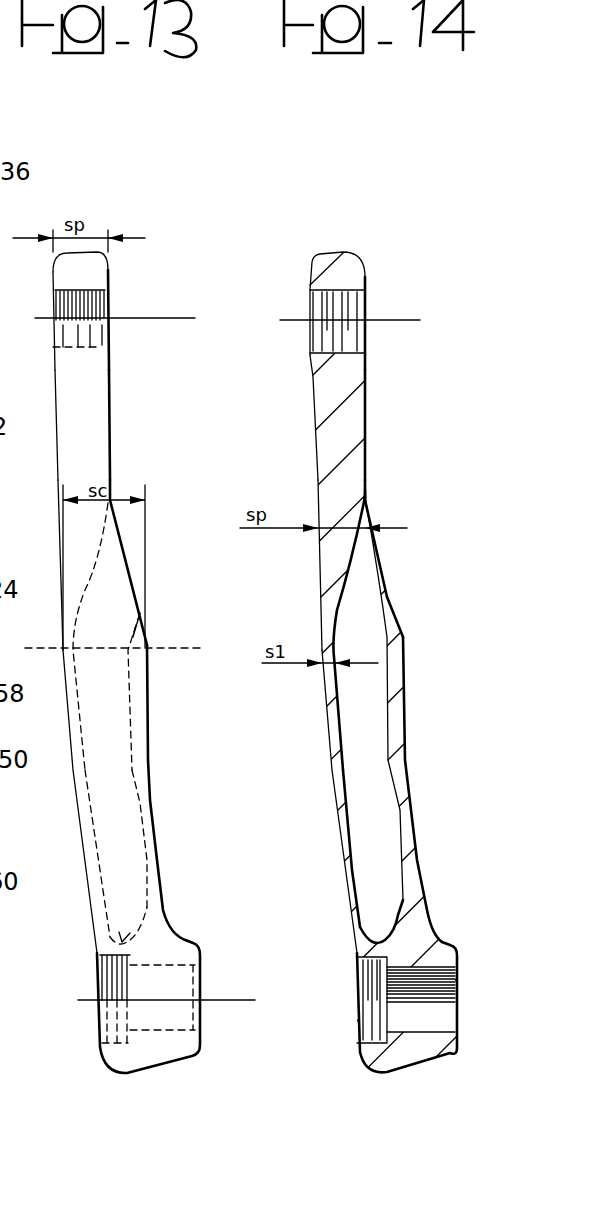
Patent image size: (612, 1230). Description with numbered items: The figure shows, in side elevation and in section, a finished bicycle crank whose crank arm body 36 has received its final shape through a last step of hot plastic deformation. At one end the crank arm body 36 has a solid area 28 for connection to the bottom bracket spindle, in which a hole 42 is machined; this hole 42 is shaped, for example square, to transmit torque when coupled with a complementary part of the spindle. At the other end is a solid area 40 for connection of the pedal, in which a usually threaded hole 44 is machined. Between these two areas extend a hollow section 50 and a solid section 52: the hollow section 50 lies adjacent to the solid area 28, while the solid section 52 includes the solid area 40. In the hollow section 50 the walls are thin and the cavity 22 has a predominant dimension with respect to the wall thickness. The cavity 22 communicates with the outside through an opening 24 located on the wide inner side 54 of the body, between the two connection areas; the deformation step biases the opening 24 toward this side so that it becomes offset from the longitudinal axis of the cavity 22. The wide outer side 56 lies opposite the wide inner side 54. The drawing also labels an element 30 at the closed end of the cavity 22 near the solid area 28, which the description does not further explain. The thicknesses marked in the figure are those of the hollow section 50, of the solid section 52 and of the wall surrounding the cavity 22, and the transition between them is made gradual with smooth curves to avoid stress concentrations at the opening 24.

In FIG. 13, the cavity 22 is at (158, 804).
In FIG. 14, the cavity 22 is at (388, 781).
In FIG. 13, the opening 24 is at (152, 612).
In FIG. 14, the opening 24 is at (398, 612).
In FIG. 13, the solid area for connection to the bottom bracket spindle 28 is at (172, 951).
In FIG. 14, the solid area for connection to the bottom bracket spindle 28 is at (442, 942).
In FIG. 13, the closed end of slot 30 is at (173, 903).
In FIG. 14, the closed end of slot 30 is at (393, 928).
In FIG. 13, the crank arm body 36 is at (180, 267).
In FIG. 14, the crank arm body 36 is at (421, 260).
In FIG. 13, the solid area for connection of the pedal 40 is at (95, 357).
In FIG. 14, the solid area for connection of the pedal 40 is at (355, 363).
In FIG. 13, the hole for connection to the bottom bracket spindle 42 is at (172, 965).
In FIG. 14, the hole for connection to the bottom bracket spindle 42 is at (457, 1003).
In FIG. 13, the hole for connection of the pedal 44 is at (114, 312).
In FIG. 14, the hole for connection of the pedal 44 is at (357, 293).
In FIG. 13, the hollow section 50 is at (162, 728).
In FIG. 14, the hollow section 50 is at (416, 733).
In FIG. 13, the solid section 52 is at (132, 440).
In FIG. 14, the solid section 52 is at (377, 446).
In FIG. 13, the wide inner side 54 is at (150, 688).
In FIG. 14, the wide inner side 54 is at (407, 668).
In FIG. 13, the wide outer side 56 is at (68, 585).
In FIG. 14, the wide outer side 56 is at (317, 600).